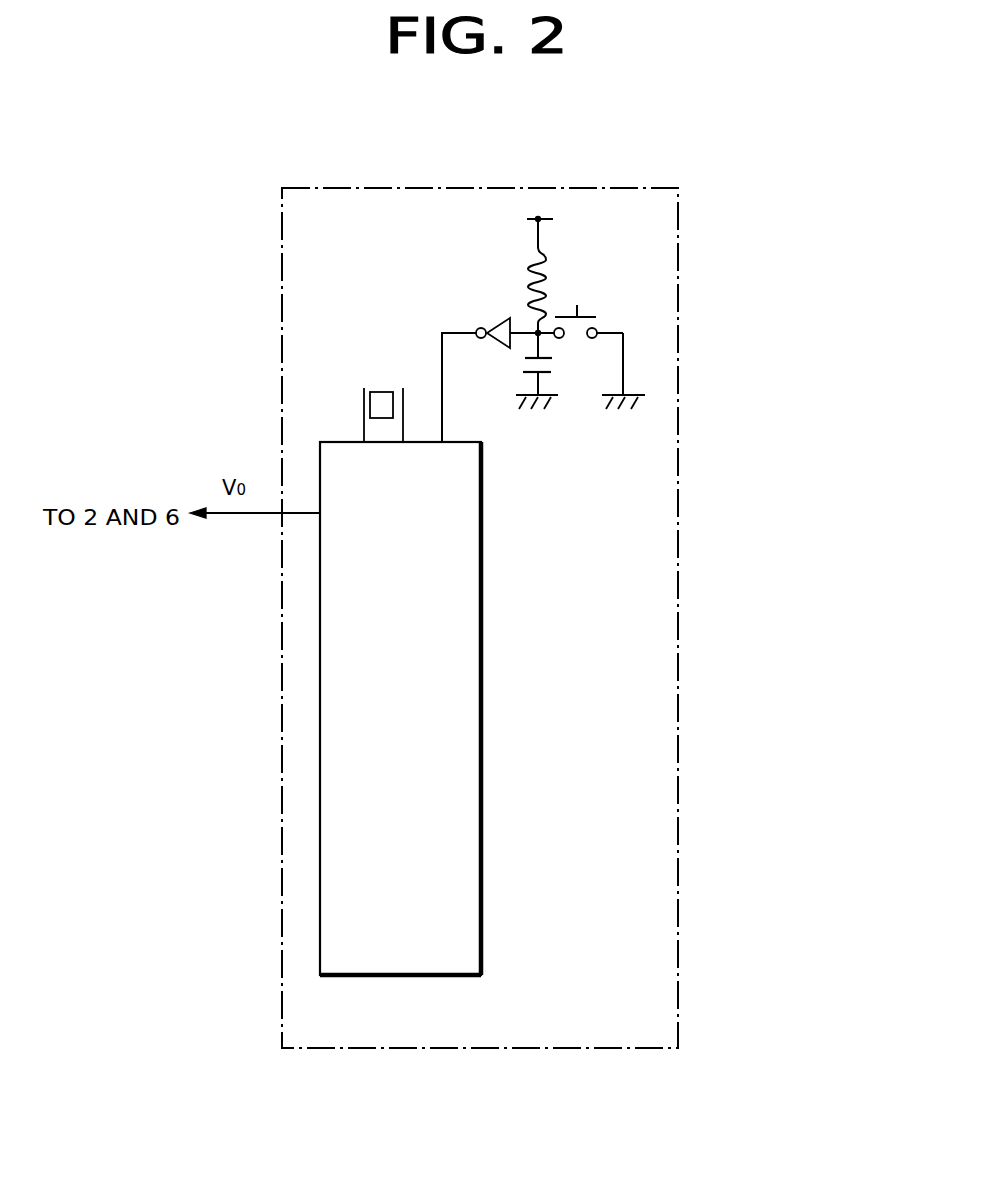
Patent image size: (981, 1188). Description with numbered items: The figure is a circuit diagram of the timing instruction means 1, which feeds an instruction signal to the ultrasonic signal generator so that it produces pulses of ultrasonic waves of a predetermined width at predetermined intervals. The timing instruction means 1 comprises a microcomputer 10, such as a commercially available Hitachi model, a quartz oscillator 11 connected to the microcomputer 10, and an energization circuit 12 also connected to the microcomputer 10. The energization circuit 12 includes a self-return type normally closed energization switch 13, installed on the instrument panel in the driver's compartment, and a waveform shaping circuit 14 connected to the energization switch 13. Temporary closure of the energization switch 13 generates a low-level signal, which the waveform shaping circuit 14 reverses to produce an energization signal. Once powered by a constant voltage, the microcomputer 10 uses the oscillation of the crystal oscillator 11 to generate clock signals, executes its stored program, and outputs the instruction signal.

The timing instruction means 1 is at (679, 666).
The microcomputer 10 is at (482, 682).
The quartz oscillator 11 is at (377, 388).
The energization circuit 12 is at (551, 327).
The energization switch 13 is at (580, 338).
The waveform shaping circuit 14 is at (523, 372).